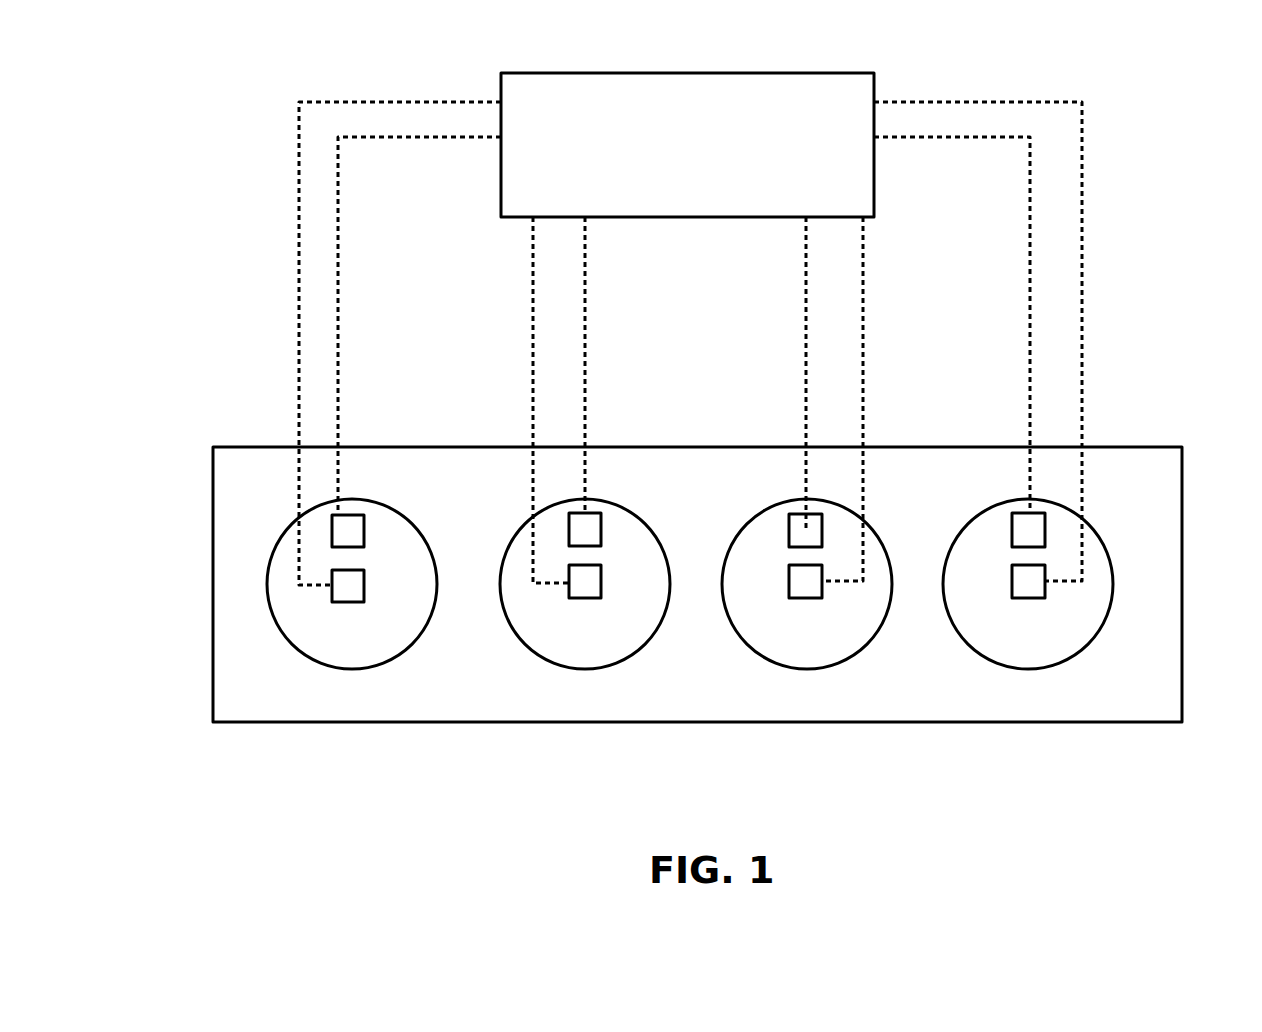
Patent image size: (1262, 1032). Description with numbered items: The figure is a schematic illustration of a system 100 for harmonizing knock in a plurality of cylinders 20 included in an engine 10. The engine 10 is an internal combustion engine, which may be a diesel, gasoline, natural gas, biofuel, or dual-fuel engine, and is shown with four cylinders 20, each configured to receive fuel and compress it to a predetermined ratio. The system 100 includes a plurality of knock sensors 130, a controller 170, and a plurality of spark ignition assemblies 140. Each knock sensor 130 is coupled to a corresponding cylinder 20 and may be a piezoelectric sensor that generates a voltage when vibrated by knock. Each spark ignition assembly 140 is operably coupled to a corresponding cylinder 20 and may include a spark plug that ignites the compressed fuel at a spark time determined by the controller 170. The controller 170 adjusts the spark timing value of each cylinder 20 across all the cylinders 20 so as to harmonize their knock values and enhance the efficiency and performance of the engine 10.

The system 100 is at (1137, 118).
The controller 170 is at (687, 145).
The engine 10 is at (222, 507).
The cylinder 20 is at (304, 643).
The knock sensor 130 is at (363, 516).
The spark ignition assembly 140 is at (352, 587).